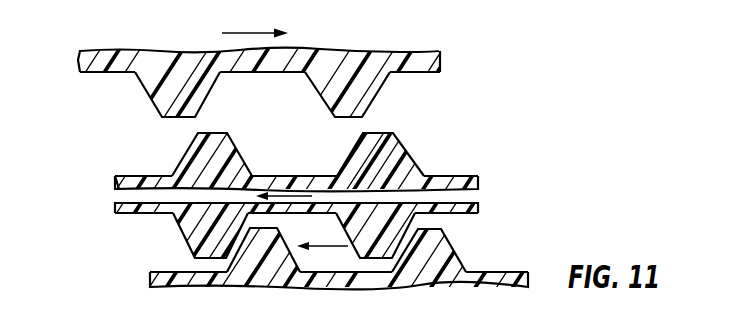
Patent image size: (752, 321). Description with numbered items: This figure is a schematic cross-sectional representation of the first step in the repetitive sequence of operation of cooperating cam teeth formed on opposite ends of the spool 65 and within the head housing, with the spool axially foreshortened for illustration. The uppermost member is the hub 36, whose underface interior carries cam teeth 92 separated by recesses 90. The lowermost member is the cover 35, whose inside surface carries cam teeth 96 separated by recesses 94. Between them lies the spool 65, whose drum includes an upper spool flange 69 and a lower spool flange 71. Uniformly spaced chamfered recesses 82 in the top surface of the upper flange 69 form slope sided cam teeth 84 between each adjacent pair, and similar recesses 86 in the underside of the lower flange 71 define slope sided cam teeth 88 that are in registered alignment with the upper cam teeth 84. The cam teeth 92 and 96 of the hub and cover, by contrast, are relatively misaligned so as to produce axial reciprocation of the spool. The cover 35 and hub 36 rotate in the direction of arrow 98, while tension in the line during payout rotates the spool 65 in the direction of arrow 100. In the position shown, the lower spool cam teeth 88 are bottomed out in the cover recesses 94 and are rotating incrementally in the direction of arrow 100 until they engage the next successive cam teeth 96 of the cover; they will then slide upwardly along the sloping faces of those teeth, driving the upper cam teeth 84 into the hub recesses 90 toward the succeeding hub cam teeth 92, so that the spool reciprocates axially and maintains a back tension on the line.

The cover 35 is at (364, 160).
The hub 36 is at (248, 160).
The spool 65 is at (290, 160).
The upper spool flange 69 is at (114, 182).
The lower spool flange 71 is at (302, 160).
The chamfered recesses 82 is at (130, 174).
The upper cam teeth 84 is at (192, 162).
The recesses 86 is at (135, 215).
The lower cam teeth 88 is at (188, 241).
The hub recesses 90 is at (112, 74).
The hub cam teeth 92 is at (148, 95).
The cover recesses 94 is at (163, 270).
The cover cam teeth 96 is at (252, 256).
The arrow 98 is at (257, 31).
The arrow 100 is at (297, 176).